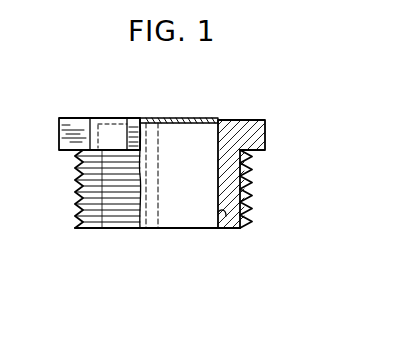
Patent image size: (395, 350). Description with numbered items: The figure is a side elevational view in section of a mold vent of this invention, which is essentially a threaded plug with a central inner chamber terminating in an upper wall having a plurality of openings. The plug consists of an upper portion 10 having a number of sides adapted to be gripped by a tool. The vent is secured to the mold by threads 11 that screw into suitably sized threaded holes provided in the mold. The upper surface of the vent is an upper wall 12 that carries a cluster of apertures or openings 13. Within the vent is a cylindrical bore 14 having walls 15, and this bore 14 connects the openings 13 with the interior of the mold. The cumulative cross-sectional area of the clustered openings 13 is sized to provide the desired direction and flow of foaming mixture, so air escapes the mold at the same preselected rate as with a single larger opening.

The upper portion 10 is at (267, 135).
The threads 11 is at (244, 198).
The upper wall 12 is at (104, 98).
The openings 13 is at (180, 118).
The cylindrical bore 14 is at (177, 203).
The walls 15 is at (225, 212).